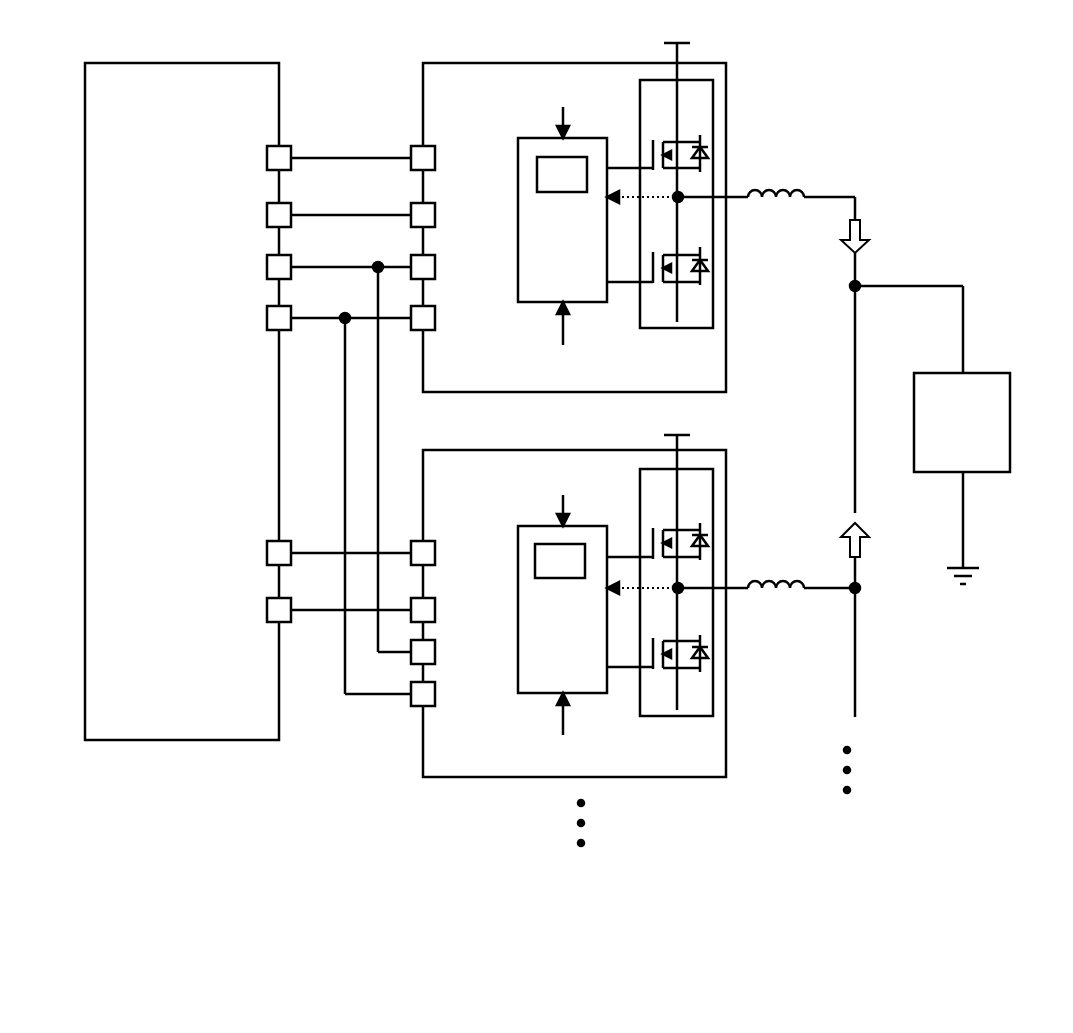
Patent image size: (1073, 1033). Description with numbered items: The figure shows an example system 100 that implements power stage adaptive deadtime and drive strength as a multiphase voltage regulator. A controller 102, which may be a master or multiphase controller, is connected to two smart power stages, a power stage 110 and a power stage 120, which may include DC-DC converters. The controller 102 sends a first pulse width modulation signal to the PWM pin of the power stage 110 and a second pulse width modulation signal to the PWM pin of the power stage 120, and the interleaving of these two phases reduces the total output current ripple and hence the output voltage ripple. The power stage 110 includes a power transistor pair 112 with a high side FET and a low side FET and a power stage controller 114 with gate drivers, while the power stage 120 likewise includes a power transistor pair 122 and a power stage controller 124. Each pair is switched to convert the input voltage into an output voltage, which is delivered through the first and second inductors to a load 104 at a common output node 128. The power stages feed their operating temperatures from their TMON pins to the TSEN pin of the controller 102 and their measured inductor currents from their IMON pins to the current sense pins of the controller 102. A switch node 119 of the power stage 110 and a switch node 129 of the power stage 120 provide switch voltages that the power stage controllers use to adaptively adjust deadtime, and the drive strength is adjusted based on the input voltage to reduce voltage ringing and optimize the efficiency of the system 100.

The system 100 is at (893, 102).
The controller 102 is at (163, 100).
The load 104 is at (943, 445).
The power stage 110 is at (423, 92).
The power transistor pair 112 is at (697, 80).
The power stage controller 114 is at (543, 234).
The switch node 119 is at (678, 197).
The power stage 120 is at (462, 777).
The power transistor pair 122 is at (697, 469).
The power stage controller 124 is at (543, 623).
The output node 128 is at (855, 286).
The switch node 129 is at (678, 588).